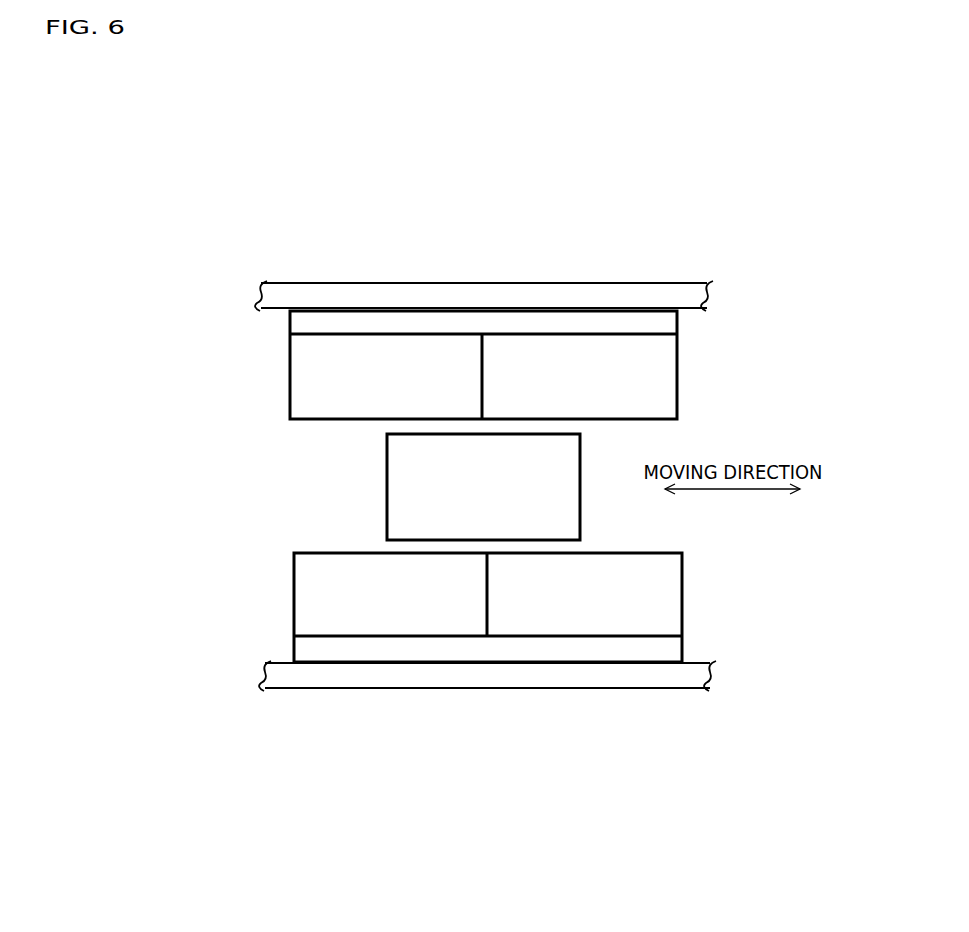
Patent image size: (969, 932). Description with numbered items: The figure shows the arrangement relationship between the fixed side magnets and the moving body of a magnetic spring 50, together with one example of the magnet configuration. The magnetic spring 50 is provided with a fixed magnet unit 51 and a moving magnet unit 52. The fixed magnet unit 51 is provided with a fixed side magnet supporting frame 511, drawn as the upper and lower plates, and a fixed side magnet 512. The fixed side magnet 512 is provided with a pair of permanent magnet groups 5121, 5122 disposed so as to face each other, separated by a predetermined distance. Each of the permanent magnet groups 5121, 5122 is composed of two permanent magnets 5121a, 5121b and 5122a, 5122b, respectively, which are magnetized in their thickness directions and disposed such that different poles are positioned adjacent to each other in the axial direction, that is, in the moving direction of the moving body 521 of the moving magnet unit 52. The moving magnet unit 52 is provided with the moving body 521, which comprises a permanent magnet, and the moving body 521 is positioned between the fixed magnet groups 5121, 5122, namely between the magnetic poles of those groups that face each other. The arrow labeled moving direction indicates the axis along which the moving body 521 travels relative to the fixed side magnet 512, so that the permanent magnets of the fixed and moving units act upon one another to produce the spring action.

The magnetic spring 50 is at (498, 281).
The fixed magnet unit 51 is at (681, 353).
The fixed side magnet supporting frame 511 is at (608, 283).
The fixed side magnet 512 is at (187, 534).
The permanent magnet group 5121 is at (287, 399).
The permanent magnet 5121a is at (667, 405).
The permanent magnet 5121b is at (293, 353).
The permanent magnet group 5122 is at (292, 556).
The permanent magnet 5122a is at (673, 597).
The permanent magnet 5122b is at (300, 618).
The moving magnet unit 52 is at (384, 481).
The moving body 521 is at (576, 512).